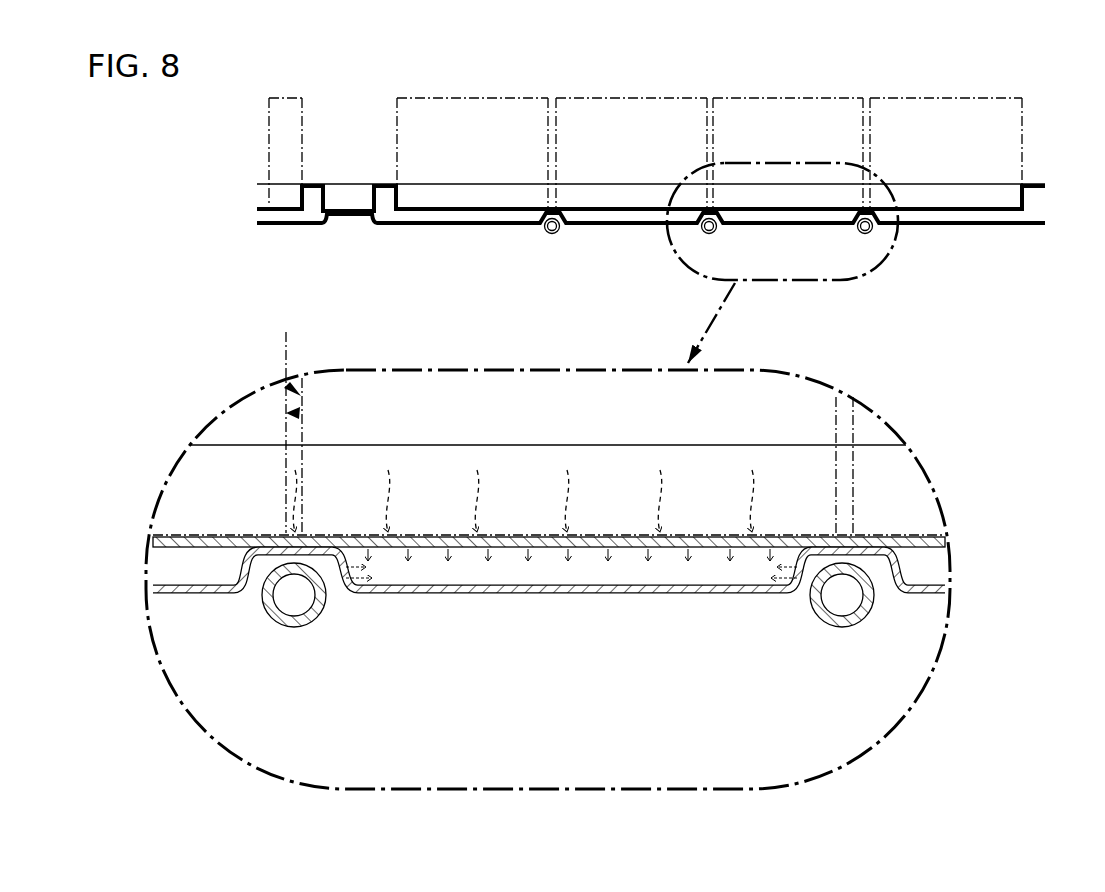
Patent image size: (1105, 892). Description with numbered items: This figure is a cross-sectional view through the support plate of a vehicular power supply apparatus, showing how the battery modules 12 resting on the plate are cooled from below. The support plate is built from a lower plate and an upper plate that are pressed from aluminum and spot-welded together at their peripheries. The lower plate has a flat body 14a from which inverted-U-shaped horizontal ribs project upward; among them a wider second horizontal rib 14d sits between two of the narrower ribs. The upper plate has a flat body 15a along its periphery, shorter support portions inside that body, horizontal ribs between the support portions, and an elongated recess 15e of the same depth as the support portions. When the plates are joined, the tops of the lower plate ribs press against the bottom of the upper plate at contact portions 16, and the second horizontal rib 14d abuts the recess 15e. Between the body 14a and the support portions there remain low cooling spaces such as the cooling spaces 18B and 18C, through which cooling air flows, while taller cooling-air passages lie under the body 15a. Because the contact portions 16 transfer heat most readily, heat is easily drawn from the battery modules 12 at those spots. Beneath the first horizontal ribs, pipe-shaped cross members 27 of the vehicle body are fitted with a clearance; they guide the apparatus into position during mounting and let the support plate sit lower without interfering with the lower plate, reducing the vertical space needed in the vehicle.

The battery module 12 is at (285, 95).
The body of lower plate 14a is at (472, 596).
The second horizontal rib 14d is at (378, 215).
The body of upper plate 15a is at (1035, 186).
The elongated recess 15e is at (351, 207).
The contact portion 16 is at (548, 206).
The second cooling space 18B is at (928, 214).
The third cooling space 18C is at (291, 216).
The cross member 27 is at (553, 236).